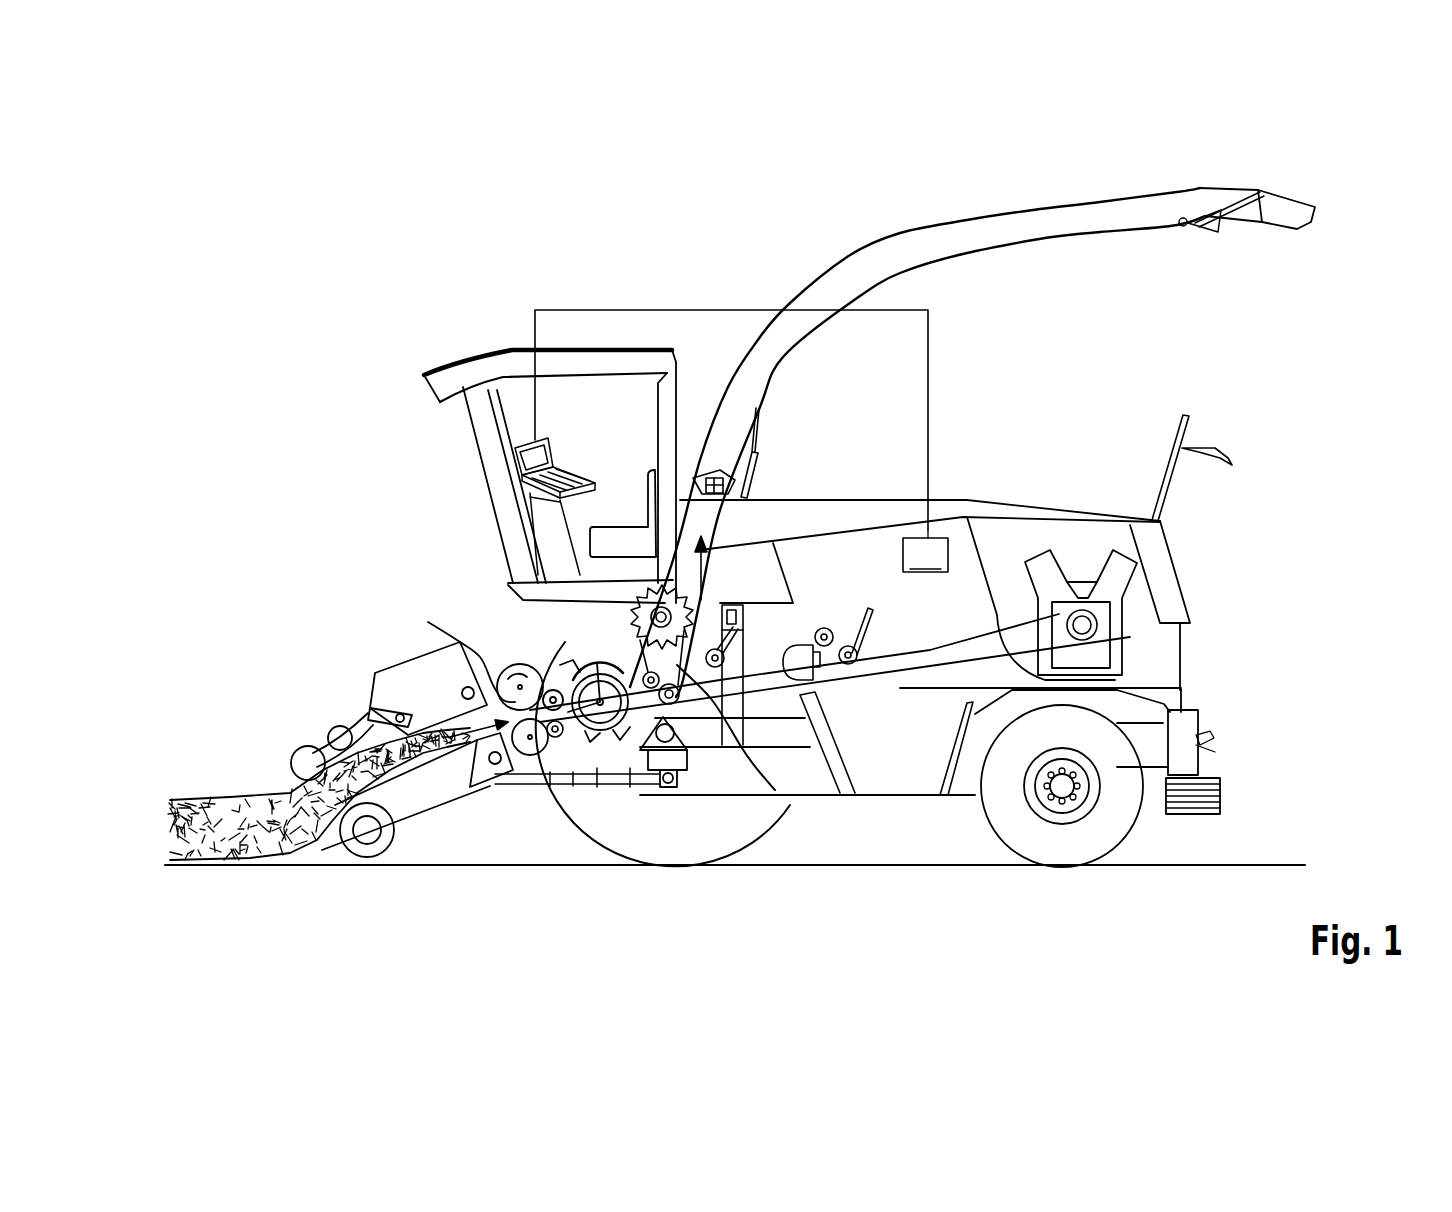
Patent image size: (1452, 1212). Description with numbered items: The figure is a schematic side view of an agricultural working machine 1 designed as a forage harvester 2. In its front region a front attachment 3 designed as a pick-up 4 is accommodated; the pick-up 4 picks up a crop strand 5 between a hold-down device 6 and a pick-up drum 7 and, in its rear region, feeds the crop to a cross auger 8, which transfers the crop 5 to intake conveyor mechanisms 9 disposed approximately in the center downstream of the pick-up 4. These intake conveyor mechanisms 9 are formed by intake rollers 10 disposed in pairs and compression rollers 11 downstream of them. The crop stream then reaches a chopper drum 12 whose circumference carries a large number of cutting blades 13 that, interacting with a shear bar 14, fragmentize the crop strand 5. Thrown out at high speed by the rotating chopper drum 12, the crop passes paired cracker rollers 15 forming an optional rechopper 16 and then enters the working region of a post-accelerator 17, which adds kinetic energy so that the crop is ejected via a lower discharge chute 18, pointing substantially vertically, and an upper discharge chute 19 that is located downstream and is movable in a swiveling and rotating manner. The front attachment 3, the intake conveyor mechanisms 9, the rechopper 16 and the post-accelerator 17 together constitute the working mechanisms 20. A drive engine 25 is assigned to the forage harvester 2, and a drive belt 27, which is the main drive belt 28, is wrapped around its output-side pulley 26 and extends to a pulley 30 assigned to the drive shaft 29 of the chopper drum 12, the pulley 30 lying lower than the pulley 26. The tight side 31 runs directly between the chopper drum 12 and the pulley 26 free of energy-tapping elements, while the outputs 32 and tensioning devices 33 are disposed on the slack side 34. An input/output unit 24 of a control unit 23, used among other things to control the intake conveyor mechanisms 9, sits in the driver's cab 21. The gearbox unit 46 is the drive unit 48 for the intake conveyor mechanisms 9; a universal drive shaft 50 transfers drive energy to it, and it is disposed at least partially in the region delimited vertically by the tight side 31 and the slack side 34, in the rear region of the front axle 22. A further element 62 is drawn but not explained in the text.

The agricultural working machine 1 is at (740, 561).
The forage harvester 2 is at (640, 290).
The front attachment 3 is at (459, 759).
The pick-up 4 is at (328, 692).
The crop strand 5 is at (240, 795).
The hold-down device 6 is at (305, 745).
The pick-up drum 7 is at (352, 836).
The cross auger 8 is at (402, 800).
The intake conveyor mechanisms 9 is at (508, 655).
The intake rollers 10 is at (530, 755).
The compression rollers 11 is at (562, 765).
The chopper drum 12 is at (606, 735).
The cutting blades 13 is at (585, 655).
The shear bar 14 is at (585, 745).
The cracker rollers 15 is at (767, 838).
The rechopper 16 is at (706, 800).
The post-accelerator 17 is at (680, 535).
The lower discharge chute 18 is at (755, 508).
The upper discharge chute 19 is at (953, 240).
The working mechanisms 20 is at (584, 714).
The driver's cab 21 is at (440, 385).
The front axle 22 is at (682, 745).
The control unit 23 is at (925, 551).
The input/output unit 24 is at (575, 500).
The drive engine 25 is at (1115, 580).
The output-side pulley 26 is at (1130, 632).
The drive belt 27 is at (1143, 771).
The main drive belt 28 is at (1180, 688).
The drive shaft 29 is at (578, 690).
The pulley 30 is at (455, 653).
The tight side 31 is at (913, 667).
The outputs 32 is at (832, 627).
The tensioning devices 33 is at (730, 653).
The slack side 34 is at (1012, 568).
The gearbox unit 46 is at (886, 777).
The drive unit 48 is at (820, 695).
The universal drive shaft 50 is at (753, 727).
The actuator 62 is at (855, 665).